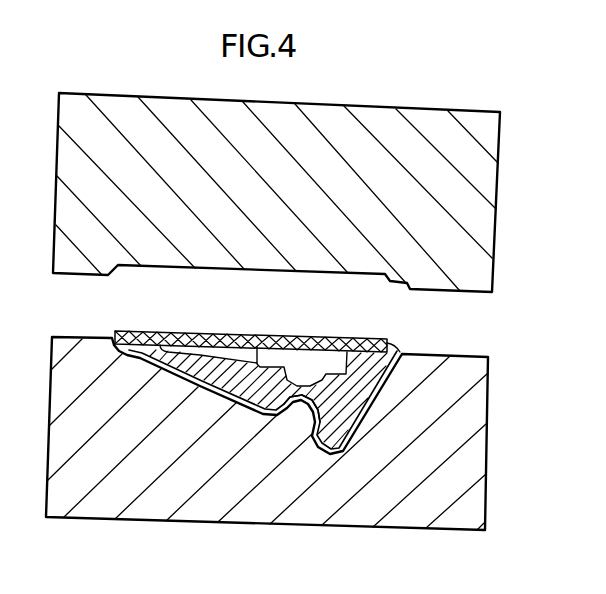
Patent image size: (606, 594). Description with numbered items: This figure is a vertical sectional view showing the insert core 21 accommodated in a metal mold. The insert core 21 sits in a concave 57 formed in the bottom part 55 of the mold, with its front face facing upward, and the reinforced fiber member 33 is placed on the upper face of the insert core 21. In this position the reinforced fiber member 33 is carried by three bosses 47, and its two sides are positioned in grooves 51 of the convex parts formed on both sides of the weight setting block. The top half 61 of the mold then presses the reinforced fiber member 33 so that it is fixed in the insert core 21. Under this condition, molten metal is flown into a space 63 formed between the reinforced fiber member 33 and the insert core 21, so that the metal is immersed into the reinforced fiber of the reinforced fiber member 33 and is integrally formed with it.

The insert core 21 is at (401, 351).
The reinforced fiber member 33 is at (238, 334).
The bosses 47 is at (297, 352).
The grooves 51 is at (369, 339).
The bottom part 55 is at (465, 457).
The concave 57 is at (302, 441).
The top half 61 is at (480, 234).
The space 63 is at (183, 351).